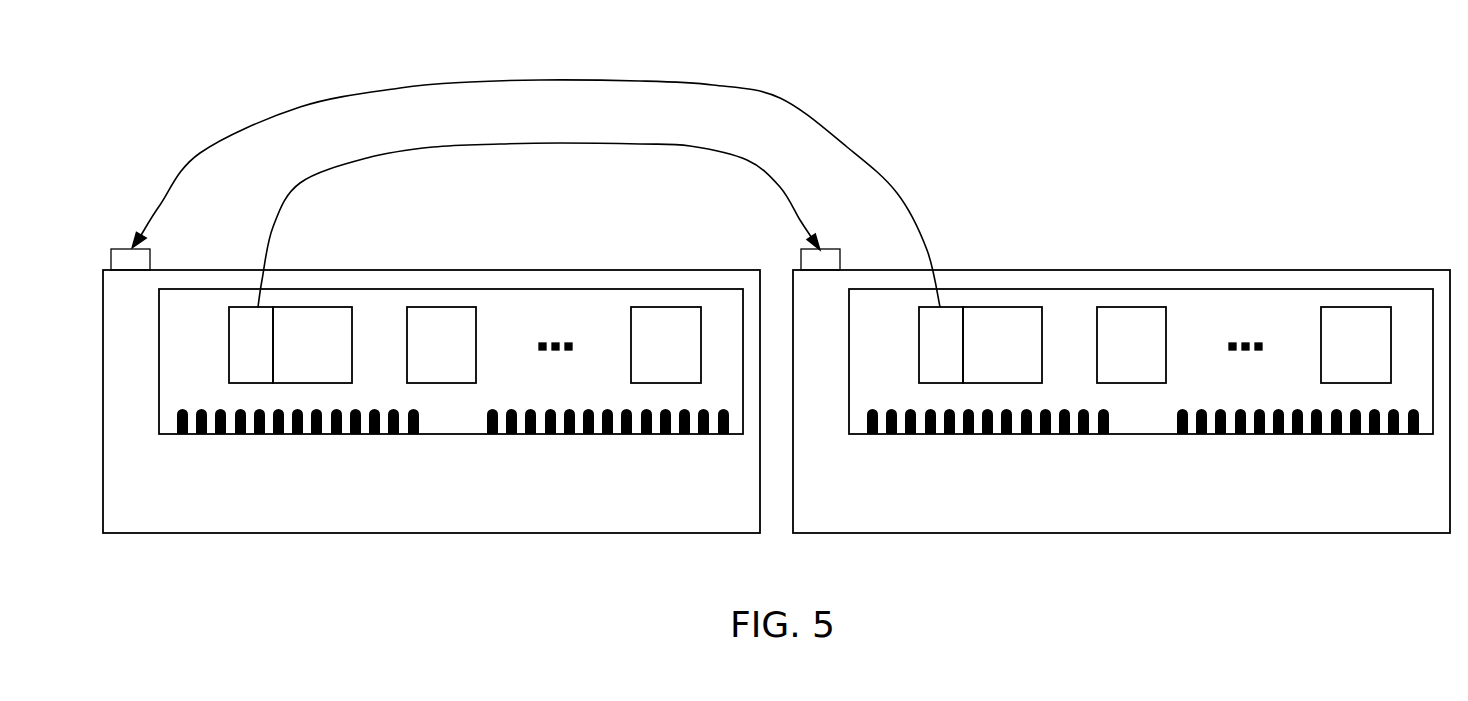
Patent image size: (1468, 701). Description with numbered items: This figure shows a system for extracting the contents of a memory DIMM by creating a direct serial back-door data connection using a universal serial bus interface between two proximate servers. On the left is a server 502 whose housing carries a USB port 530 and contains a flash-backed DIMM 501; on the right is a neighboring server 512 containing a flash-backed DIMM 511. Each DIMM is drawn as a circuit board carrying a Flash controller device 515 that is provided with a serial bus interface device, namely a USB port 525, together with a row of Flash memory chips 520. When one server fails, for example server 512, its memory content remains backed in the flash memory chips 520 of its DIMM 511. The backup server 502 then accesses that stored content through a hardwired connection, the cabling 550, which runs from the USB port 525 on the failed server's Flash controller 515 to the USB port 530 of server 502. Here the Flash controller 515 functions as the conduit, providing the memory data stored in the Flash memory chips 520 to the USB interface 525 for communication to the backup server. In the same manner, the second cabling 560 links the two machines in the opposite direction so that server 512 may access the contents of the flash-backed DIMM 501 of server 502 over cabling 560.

The flash-backed DIMM 501 is at (655, 434).
The server 502 is at (430, 533).
The flash-backed DIMM 511 is at (901, 434).
The server 512 is at (1120, 533).
The Flash controller device 515 is at (352, 348).
The Flash memory chips 520 is at (476, 347).
The USB port 525 is at (233, 363).
The USB port 530 is at (150, 259).
The cabling 550 is at (545, 80).
The cabling 560 is at (560, 147).